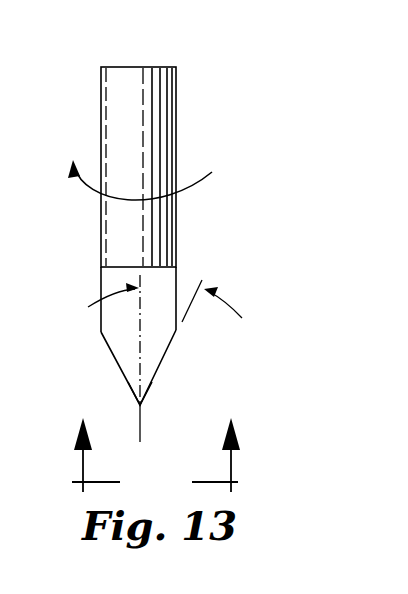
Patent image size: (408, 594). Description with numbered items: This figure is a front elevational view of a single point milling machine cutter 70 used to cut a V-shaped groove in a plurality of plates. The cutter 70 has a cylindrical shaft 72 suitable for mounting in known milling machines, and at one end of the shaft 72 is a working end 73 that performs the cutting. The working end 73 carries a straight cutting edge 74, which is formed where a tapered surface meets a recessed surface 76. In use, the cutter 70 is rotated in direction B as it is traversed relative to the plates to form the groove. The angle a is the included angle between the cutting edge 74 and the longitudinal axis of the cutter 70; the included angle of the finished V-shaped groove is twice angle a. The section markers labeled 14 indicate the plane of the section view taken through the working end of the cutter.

The single point milling machine cutter 70 is at (182, 228).
The cylindrical shaft 72 is at (176, 132).
The working end 73 is at (173, 342).
The straight cutting edge 74 is at (155, 377).
The recessed surface 76 is at (122, 347).
The direction of rotation B is at (96, 198).
The included angle a is at (237, 303).
The section line 14- 14 is at (161, 445).